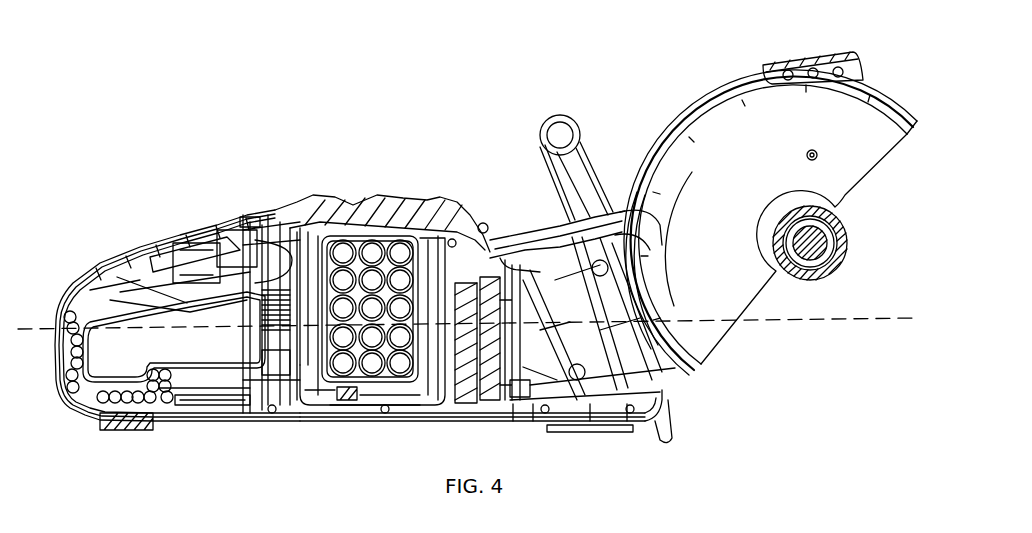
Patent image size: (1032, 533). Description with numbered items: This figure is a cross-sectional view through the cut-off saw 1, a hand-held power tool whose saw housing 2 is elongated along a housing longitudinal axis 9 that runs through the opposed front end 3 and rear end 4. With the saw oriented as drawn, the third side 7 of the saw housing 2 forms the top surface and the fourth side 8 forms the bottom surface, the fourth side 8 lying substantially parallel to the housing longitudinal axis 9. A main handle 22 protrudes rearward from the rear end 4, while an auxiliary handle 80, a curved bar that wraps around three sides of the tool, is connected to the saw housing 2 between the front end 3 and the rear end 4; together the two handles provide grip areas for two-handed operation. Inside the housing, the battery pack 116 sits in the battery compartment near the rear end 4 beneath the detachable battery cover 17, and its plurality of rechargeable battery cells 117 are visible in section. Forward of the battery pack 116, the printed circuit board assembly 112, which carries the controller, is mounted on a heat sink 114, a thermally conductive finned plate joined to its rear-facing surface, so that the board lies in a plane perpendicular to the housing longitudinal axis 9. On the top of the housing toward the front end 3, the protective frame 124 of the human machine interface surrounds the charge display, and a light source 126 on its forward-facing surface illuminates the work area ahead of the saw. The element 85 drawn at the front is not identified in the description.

The cut-off saw 1 is at (379, 50).
The saw housing 2 is at (557, 227).
The third side 7 is at (512, 243).
The front end 3 is at (673, 377).
The rear end 4 is at (253, 334).
The fourth side 8 is at (297, 427).
The housing longitudinal axis 9 is at (847, 320).
The battery cover 17 is at (432, 200).
The main handle 22 is at (138, 268).
The auxiliary handle 80 is at (595, 177).
The blade guard 85 is at (752, 182).
The printed circuit board assembly 112 is at (505, 430).
The heat sink 114 is at (475, 427).
The battery pack 116 is at (352, 213).
The battery cells 117 is at (332, 420).
The protective frame 124 is at (632, 210).
The light source 126 is at (642, 233).